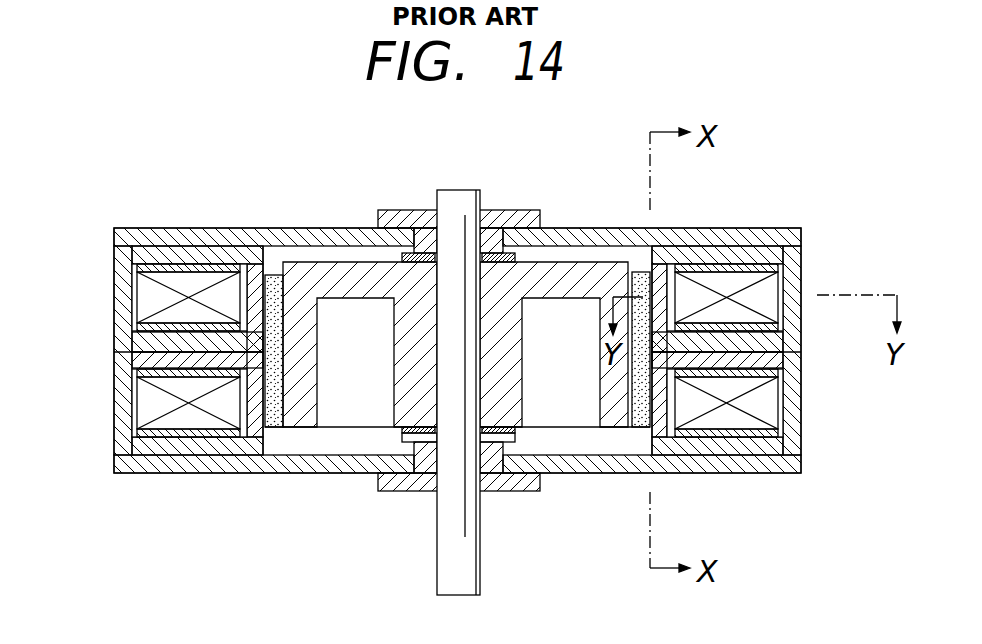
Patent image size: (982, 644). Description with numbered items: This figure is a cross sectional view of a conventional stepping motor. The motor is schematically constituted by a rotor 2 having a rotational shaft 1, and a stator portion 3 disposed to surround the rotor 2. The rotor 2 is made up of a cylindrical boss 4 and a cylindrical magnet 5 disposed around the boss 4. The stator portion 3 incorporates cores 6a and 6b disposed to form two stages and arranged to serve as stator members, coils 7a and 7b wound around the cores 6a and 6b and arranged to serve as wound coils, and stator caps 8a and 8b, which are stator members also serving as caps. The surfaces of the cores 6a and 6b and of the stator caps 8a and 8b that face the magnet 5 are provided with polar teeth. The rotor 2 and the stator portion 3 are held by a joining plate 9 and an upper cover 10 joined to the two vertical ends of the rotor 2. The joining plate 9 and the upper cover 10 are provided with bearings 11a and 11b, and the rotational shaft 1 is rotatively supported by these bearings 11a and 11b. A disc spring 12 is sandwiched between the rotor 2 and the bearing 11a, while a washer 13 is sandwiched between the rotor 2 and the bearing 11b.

The rotational shaft 1 is at (461, 188).
The rotor 2 is at (290, 428).
The stator portion 3 is at (98, 301).
The cylindrical boss 4 is at (330, 283).
The cylindrical magnet 5 is at (273, 275).
The core 6a is at (782, 354).
The core 6b is at (781, 338).
The coil 7a is at (770, 401).
The coil 7b is at (770, 285).
The stator cap 8a is at (786, 439).
The stator cap 8b is at (792, 251).
The joining plate 9 is at (581, 474).
The upper cover 10 is at (747, 227).
The bearing 11a is at (414, 492).
The bearing 11b is at (512, 222).
The disc spring 12 is at (401, 434).
The washer 13 is at (420, 253).